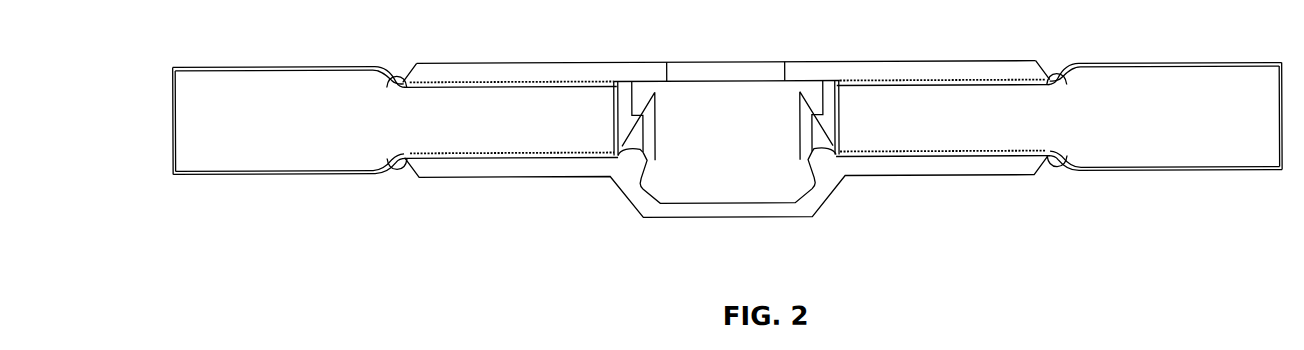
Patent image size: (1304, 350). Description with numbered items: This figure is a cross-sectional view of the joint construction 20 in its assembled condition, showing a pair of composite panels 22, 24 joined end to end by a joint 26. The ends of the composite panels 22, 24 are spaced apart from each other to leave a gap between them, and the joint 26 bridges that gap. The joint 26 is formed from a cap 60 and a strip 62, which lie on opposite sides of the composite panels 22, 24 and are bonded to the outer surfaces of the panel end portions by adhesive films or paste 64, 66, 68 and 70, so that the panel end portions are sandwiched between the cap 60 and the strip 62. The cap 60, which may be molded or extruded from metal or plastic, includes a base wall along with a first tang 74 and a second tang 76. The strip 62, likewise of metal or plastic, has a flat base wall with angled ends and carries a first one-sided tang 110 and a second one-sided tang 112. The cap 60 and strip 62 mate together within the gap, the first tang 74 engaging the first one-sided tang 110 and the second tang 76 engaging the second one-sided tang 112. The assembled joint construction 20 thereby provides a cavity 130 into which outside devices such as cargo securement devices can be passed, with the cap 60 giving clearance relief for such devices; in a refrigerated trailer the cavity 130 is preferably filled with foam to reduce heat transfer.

The joint construction 20 is at (873, 32).
The composite panel 22 is at (197, 66).
The composite panel 24 is at (1237, 63).
The joint 26 is at (829, 202).
The cap 60 is at (907, 177).
The strip 62 is at (972, 60).
The adhesive film or paste 64 is at (400, 170).
The adhesive film or paste 66 is at (1056, 168).
The adhesive film or paste 68 is at (400, 74).
The adhesive film or paste 70 is at (1063, 73).
The first tang 74 is at (658, 125).
The second tang 76 is at (798, 113).
The first one-sided tang 110 is at (621, 108).
The second one-sided tang 112 is at (829, 107).
The cavity 130 is at (716, 190).